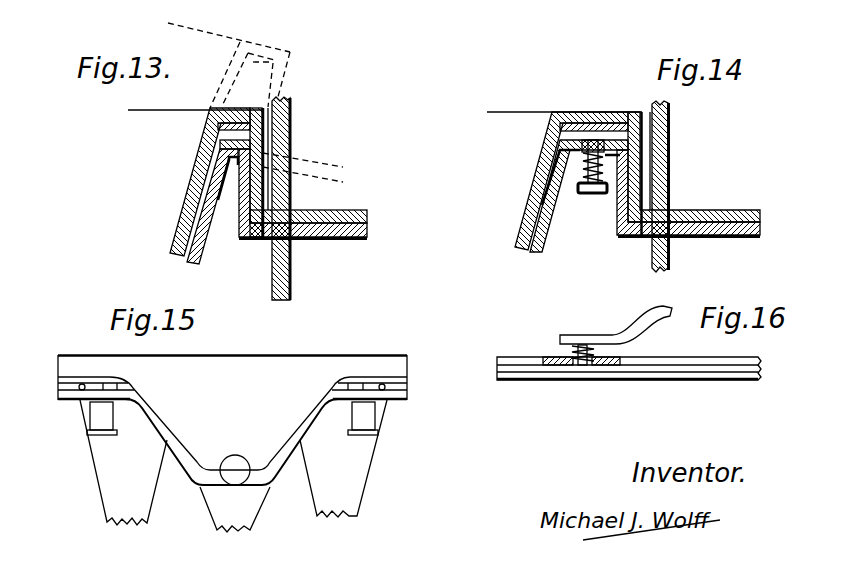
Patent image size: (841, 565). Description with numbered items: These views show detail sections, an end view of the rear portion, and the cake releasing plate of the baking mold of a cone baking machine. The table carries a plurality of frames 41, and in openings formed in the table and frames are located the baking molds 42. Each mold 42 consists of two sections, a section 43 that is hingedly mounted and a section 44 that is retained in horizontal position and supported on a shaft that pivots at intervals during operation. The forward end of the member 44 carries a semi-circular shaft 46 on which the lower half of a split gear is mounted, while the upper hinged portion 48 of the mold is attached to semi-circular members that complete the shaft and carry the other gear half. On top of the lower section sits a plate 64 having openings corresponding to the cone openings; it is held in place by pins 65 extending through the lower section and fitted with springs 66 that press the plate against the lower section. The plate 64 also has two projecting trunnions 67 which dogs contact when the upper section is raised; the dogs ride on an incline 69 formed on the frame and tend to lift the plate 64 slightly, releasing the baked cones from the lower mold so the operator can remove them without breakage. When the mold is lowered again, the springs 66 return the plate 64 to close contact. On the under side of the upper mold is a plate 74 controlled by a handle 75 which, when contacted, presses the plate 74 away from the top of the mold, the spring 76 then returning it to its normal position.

In FIG. 13, the frame 41 is at (292, 280).
In FIG. 14, the frame 41 is at (669, 260).
In FIG. 13, the baking mold 42 is at (210, 169).
In FIG. 14, the baking mold 42 is at (571, 163).
In FIG. 15, the baking mold 42 is at (232, 360).
In FIG. 13, the hinged mold section 43 is at (240, 108).
In FIG. 14, the hinged mold section 43 is at (627, 103).
In FIG. 15, the hinged mold section 43 is at (380, 385).
In FIG. 16, the hinged mold section 43 is at (505, 357).
In FIG. 13, the horizontal mold section 44 is at (240, 240).
In FIG. 14, the horizontal mold section 44 is at (617, 235).
In FIG. 15, the horizontal mold section 44 is at (408, 398).
In FIG. 15, the semi-circular shaft 46 is at (233, 477).
In FIG. 15, the upper hinged portion of the mold 48 is at (236, 462).
In FIG. 13, the plate 64 is at (258, 138).
In FIG. 14, the plate 64 is at (642, 140).
In FIG. 15, the plate 64 is at (408, 386).
In FIG. 14, the pin 65 is at (588, 163).
In FIG. 14, the spring 66 is at (583, 183).
In FIG. 15, the projecting trunnion 67 is at (386, 386).
In FIG. 14, the incline 69 is at (662, 157).
In FIG. 13, the plate 74 is at (218, 125).
In FIG. 14, the plate 74 is at (585, 123).
In FIG. 15, the plate 74 is at (58, 372).
In FIG. 16, the plate 74 is at (540, 380).
In FIG. 16, the handle 75 is at (646, 317).
In FIG. 16, the spring 76 is at (572, 350).